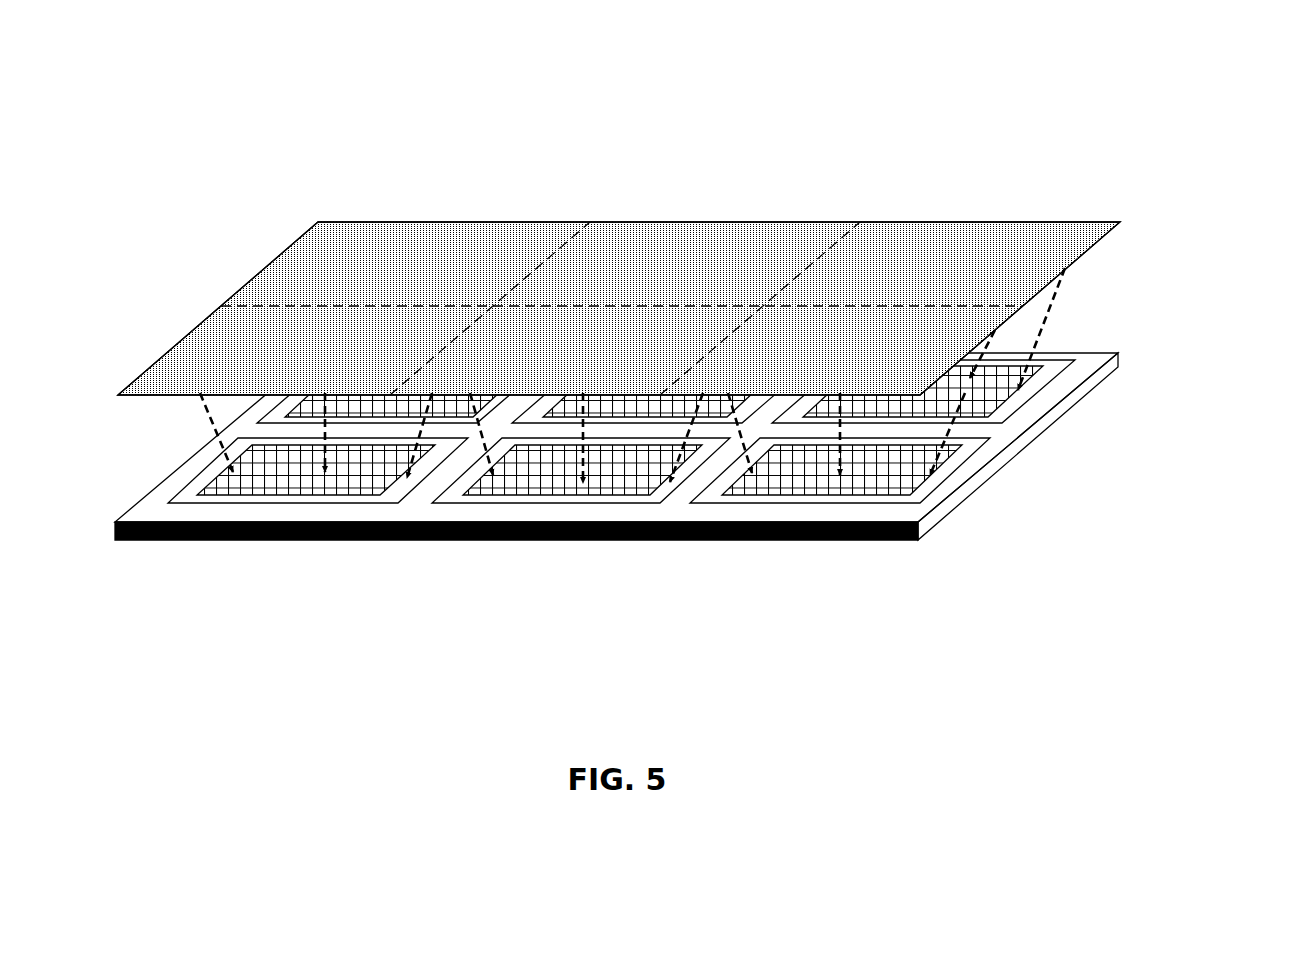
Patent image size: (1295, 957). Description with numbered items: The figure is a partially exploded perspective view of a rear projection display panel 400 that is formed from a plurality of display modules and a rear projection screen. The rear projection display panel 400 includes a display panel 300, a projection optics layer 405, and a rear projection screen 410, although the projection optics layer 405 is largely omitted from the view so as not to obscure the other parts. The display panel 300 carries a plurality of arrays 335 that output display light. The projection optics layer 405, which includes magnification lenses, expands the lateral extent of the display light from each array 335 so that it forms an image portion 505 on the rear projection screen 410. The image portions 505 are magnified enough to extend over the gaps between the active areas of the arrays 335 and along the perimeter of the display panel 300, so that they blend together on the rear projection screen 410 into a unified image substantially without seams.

The rear projection display panel 400 is at (679, 322).
The rear projection screen 410 is at (600, 304).
The projection optics layer 405 is at (738, 373).
The display panel 300 is at (957, 505).
The image portion 505 is at (372, 271).
The array 335 is at (271, 477).